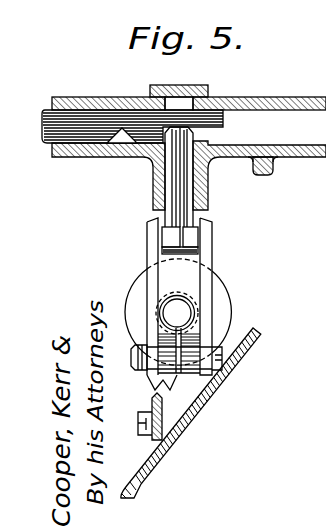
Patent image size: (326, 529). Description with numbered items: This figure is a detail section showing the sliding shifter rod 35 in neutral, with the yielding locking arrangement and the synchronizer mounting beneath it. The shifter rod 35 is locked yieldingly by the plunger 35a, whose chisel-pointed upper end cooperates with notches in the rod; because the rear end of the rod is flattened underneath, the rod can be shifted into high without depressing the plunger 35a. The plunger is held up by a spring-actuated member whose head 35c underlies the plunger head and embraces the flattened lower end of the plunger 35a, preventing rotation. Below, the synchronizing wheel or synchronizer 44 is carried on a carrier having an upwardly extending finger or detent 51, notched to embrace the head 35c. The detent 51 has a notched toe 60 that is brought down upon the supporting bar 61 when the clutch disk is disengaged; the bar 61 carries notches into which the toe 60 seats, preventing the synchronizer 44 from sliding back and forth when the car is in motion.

The sliding shifter rod 35 is at (70, 123).
The plunger 35a is at (177, 181).
The head 35c is at (165, 240).
The finger or detent 51 is at (203, 248).
The synchronizing wheel or synchronizer 44 is at (217, 292).
The notched toe 60 is at (147, 383).
The supporting bar 61 is at (190, 408).